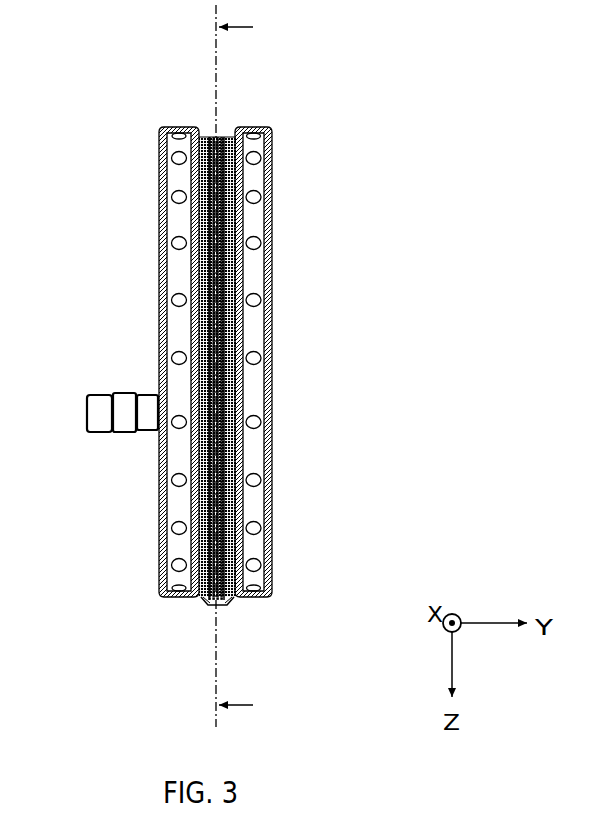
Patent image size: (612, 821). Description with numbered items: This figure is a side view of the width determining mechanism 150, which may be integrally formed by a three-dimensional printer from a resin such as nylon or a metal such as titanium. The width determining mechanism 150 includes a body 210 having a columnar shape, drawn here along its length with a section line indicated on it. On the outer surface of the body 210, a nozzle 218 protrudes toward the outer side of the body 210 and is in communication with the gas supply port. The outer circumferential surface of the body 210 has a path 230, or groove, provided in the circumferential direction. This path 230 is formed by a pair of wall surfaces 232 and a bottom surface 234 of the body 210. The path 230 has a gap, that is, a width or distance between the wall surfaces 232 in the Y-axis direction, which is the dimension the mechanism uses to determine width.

The width determining mechanism 150 is at (52, 155).
The body 210 is at (273, 173).
The nozzle 218 is at (93, 392).
The path 230 is at (208, 604).
The bottom surface 234 is at (207, 135).
The wall surfaces 232 is at (227, 604).